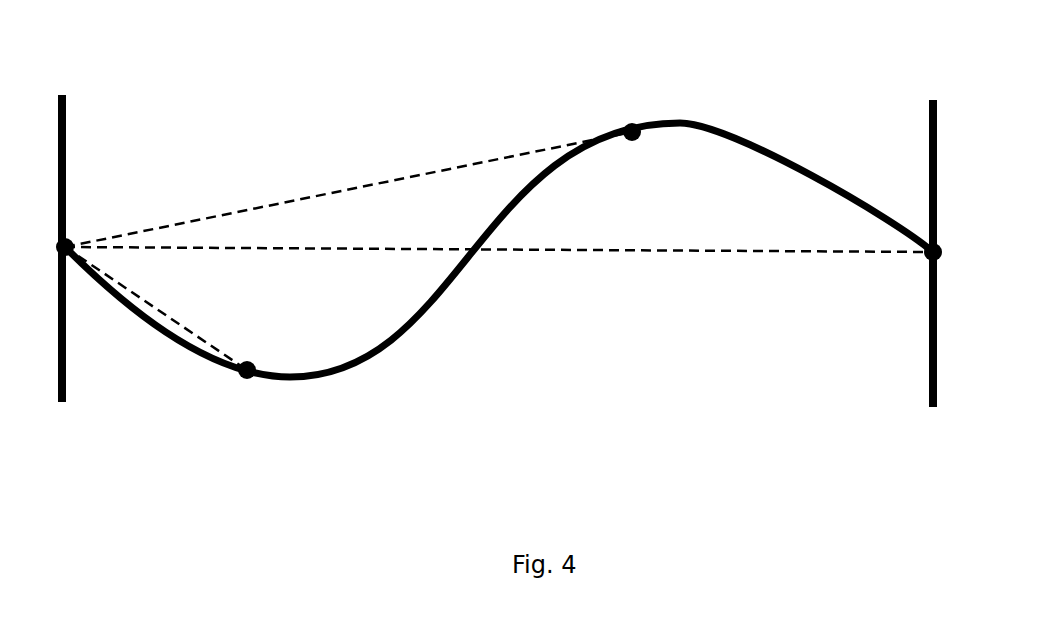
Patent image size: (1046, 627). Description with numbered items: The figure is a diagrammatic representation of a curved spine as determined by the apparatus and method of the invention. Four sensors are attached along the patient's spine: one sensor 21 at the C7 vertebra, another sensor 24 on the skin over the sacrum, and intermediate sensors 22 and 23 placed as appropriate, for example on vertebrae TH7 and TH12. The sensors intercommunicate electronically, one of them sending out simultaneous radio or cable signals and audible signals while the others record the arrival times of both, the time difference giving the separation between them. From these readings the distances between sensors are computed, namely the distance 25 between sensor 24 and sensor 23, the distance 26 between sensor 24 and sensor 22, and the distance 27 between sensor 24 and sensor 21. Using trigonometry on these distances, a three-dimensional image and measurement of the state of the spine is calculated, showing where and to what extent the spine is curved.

The sensor 21 is at (911, 270).
The intermediate sensor 22 is at (605, 120).
The intermediate sensor 23 is at (271, 386).
The sensor 24 is at (80, 224).
The distance between sensors 24 and 23 25 is at (162, 338).
The distance between sensors 24 and 22 26 is at (250, 192).
The distance between sensors 24 and 21 27 is at (666, 268).